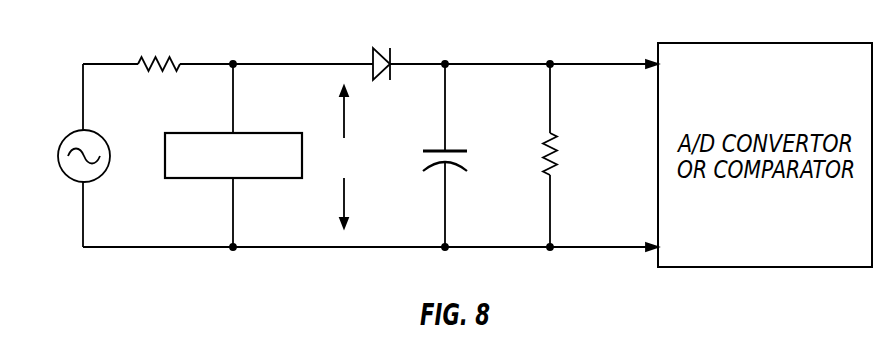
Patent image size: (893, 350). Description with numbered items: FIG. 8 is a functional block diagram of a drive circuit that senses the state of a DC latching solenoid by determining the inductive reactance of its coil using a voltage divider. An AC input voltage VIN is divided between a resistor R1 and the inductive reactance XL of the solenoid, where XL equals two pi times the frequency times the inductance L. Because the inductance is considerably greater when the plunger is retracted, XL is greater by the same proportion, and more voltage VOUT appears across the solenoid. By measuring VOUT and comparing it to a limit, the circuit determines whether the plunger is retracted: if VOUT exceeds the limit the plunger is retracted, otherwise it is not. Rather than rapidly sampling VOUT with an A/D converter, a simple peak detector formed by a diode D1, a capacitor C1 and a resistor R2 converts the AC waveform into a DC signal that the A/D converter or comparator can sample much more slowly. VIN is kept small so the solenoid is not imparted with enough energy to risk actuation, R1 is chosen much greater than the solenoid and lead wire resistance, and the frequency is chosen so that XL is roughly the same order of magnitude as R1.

The AC input voltage VIN is at (66, 156).
The resistor R1 is at (159, 43).
The inductive reactance of the solenoid XL is at (219, 155).
The voltage across the solenoid VOUT is at (343, 157).
The diode D1 is at (380, 48).
The capacitor C1 is at (453, 155).
The resistor R2 is at (568, 155).